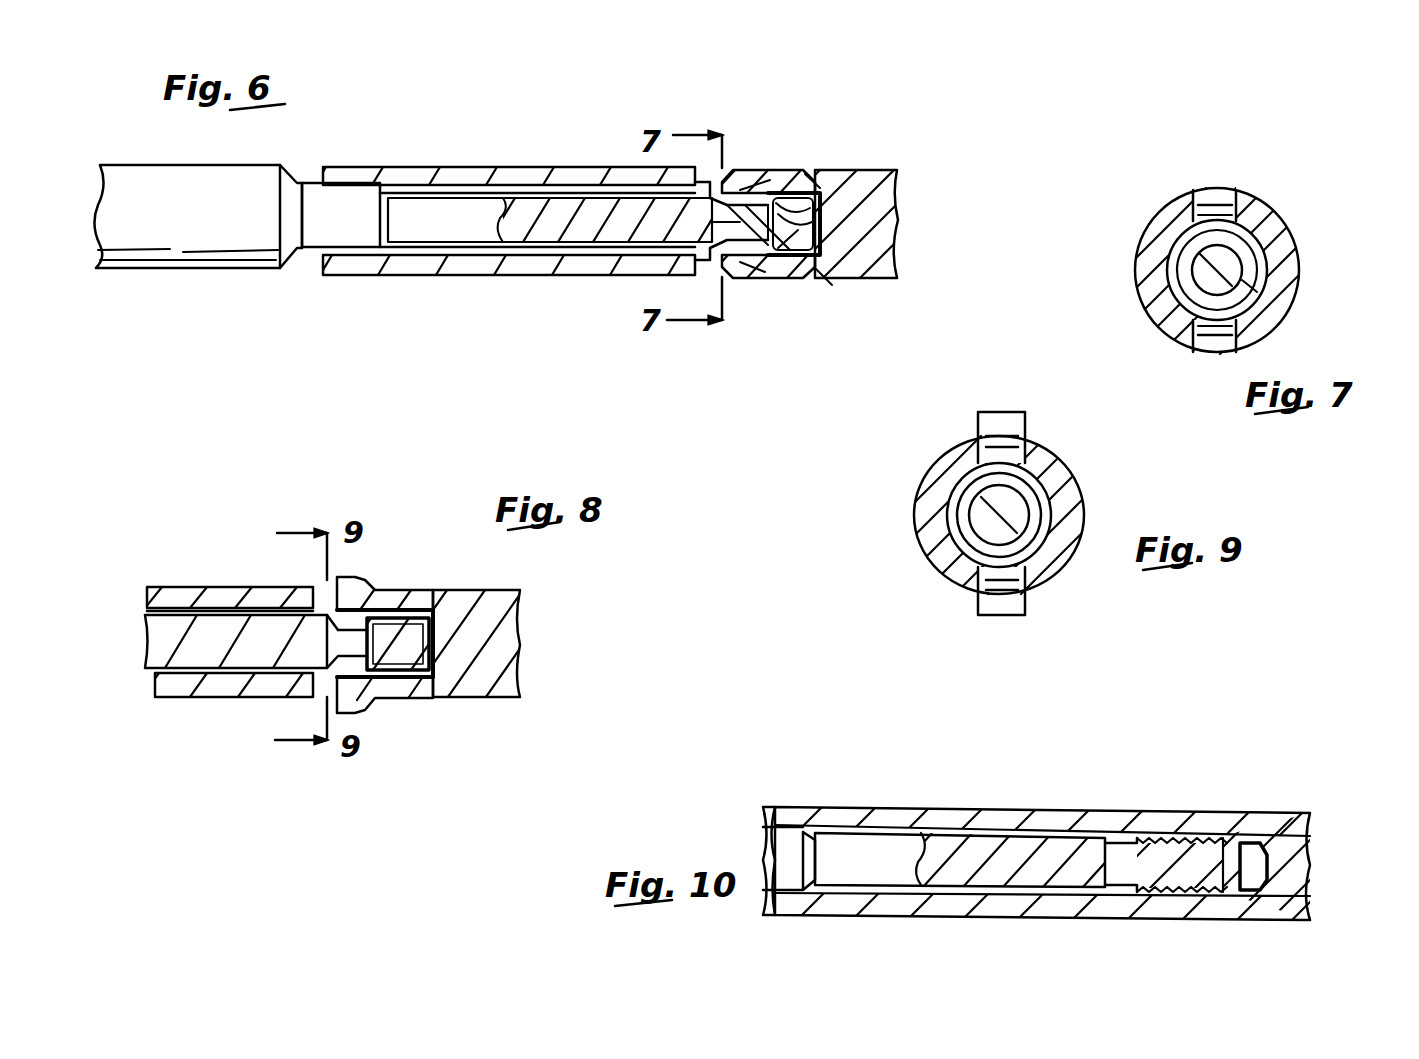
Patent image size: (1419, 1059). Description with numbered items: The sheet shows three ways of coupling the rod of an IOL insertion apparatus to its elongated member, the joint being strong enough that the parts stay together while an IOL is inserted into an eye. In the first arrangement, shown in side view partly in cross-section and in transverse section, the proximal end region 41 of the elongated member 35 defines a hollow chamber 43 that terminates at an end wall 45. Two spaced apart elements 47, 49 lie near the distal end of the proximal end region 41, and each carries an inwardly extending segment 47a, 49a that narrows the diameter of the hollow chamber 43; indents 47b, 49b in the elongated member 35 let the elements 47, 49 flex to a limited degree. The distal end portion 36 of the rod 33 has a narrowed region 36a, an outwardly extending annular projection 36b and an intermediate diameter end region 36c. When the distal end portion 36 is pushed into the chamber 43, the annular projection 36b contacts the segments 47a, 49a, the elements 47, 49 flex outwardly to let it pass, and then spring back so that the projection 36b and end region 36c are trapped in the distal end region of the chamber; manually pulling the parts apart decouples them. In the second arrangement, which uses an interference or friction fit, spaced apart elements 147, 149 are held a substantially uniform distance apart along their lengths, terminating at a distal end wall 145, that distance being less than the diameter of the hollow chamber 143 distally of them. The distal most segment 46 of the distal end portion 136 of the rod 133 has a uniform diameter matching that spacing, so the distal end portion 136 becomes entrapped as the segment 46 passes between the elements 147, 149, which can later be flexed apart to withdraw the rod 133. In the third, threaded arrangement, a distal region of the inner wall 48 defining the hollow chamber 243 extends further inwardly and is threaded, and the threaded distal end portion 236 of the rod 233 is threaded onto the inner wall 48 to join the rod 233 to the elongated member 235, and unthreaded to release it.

In FIG. 6, the rod 33 is at (218, 238).
In FIG. 6, the proximal end region 41 is at (538, 158).
In FIG. 6, the hollow chamber 43 is at (457, 190).
In FIG. 6, the elongated member 35 is at (870, 185).
In FIG. 6, the distal end portion 36 is at (793, 254).
In FIG. 6, the narrowed region 36a is at (718, 222).
In FIG. 7, the narrowed region 36a is at (1250, 272).
In FIG. 6, the annular projection 36b is at (822, 215).
In FIG. 7, the annular projection 36b is at (1250, 286).
In FIG. 6, the intermediate diameter end region 36c is at (800, 233).
In FIG. 6, the end wall 45 is at (800, 193).
In FIG. 7, the end wall 45 is at (1265, 250).
In FIG. 6, the element 47 is at (773, 178).
In FIG. 7, the element 47 is at (1210, 212).
In FIG. 6, the inwardly extending segment 47a is at (760, 190).
In FIG. 7, the inwardly extending segment 47a is at (1225, 222).
In FIG. 6, the indent 47b is at (810, 176).
In FIG. 6, the element 49 is at (778, 265).
In FIG. 7, the element 49 is at (1200, 338).
In FIG. 6, the inwardly extending segment 49a is at (755, 262).
In FIG. 7, the inwardly extending segment 49a is at (1200, 305).
In FIG. 6, the indent 49b is at (812, 272).
In FIG. 8, the rod 133 is at (160, 650).
In FIG. 8, the distal end portion 136 is at (332, 640).
In FIG. 9, the distal end portion 136 is at (1020, 533).
In FIG. 8, the hollow chamber 143 is at (148, 610).
In FIG. 8, the distal end wall 145 is at (440, 640).
In FIG. 9, the distal end wall 145 is at (1030, 480).
In FIG. 8, the element 147 is at (395, 600).
In FIG. 9, the element 147 is at (998, 432).
In FIG. 8, the element 149 is at (392, 690).
In FIG. 9, the element 149 is at (1003, 598).
In FIG. 8, the distal most segment 46 is at (430, 657).
In FIG. 10, the inner wall 48 is at (952, 830).
In FIG. 10, the rod 233 is at (866, 855).
In FIG. 10, the elongated member 235 is at (1270, 812).
In FIG. 10, the distal end portion 236 is at (1245, 868).
In FIG. 10, the hollow chamber 243 is at (838, 828).